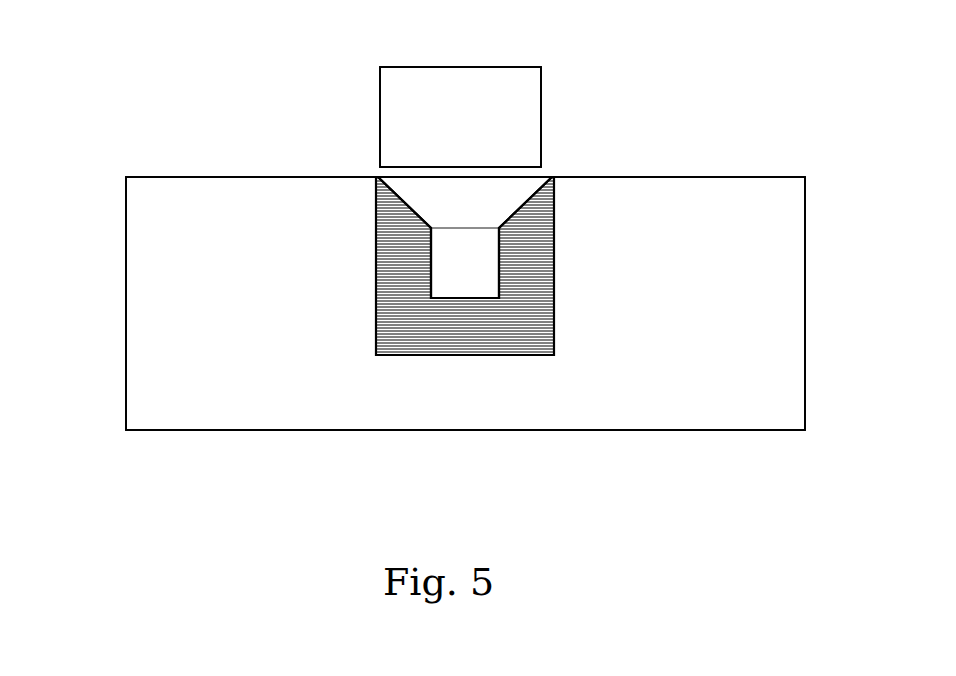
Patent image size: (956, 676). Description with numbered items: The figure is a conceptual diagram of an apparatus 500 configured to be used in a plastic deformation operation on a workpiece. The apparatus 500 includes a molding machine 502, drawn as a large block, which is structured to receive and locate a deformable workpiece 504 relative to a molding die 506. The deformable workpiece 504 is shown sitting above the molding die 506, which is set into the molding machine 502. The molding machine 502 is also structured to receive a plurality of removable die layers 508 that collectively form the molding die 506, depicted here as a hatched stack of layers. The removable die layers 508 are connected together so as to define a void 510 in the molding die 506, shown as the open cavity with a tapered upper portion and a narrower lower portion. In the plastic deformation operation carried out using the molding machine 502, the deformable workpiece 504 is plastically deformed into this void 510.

The apparatus 500 is at (106, 76).
The molding machine 502 is at (126, 260).
The deformable workpiece 504 is at (380, 88).
The molding die 506 is at (376, 192).
The removable die layers 508 is at (553, 244).
The void 510 is at (497, 202).